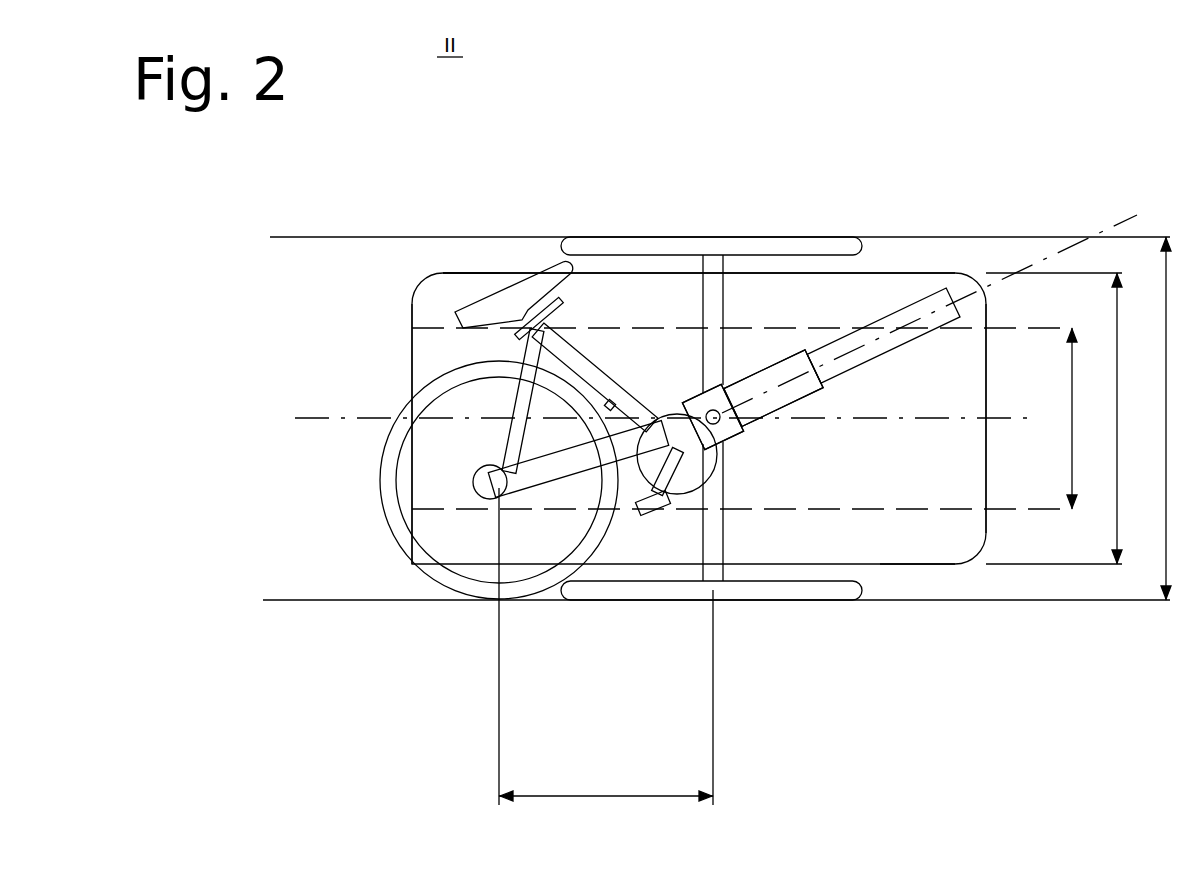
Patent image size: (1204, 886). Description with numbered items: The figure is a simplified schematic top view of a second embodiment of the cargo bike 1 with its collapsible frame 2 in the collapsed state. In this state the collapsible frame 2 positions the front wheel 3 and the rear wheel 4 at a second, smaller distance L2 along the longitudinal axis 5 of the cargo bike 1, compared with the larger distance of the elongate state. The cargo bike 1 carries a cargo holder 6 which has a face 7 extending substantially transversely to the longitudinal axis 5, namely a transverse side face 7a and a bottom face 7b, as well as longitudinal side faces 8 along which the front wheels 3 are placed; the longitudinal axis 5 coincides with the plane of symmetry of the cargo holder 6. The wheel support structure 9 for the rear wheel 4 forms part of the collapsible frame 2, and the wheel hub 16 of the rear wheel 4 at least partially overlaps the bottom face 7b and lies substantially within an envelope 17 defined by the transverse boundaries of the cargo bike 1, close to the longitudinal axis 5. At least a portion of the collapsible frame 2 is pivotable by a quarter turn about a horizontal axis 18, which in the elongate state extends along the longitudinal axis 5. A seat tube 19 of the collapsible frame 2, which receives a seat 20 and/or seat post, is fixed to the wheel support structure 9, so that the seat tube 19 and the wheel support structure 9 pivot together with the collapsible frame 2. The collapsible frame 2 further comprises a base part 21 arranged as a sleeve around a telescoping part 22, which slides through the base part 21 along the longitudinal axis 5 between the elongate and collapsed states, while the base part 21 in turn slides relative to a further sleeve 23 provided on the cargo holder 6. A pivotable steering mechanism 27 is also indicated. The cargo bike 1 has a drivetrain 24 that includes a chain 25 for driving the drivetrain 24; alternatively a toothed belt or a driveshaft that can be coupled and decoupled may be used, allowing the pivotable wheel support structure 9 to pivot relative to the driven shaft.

The cargo bike 1 is at (853, 140).
The collapsible frame 2 is at (789, 348).
The front wheel 3 is at (583, 228).
The rear wheel 4 is at (380, 531).
The longitudinal axis 5 is at (315, 420).
The cargo holder 6 is at (947, 265).
The transversely extending face of cargo holder 7 is at (698, 342).
The transverse side face of cargo holder 7a is at (412, 313).
The bottom face of cargo holder 7b is at (660, 307).
The longitudinal side face of cargo holder 8 is at (460, 273).
The wheel support structure 9 is at (505, 398).
The wheel hub 16 is at (485, 487).
The envelope defined by transverse boundaries of the cargo bike 17 is at (1093, 418).
The horizontal axis 18 is at (1144, 213).
The seat tube 19 is at (590, 368).
The seat 20 is at (513, 293).
The base part of collapsible frame 21 is at (794, 414).
The telescoping part of collapsible frame 22 is at (892, 298).
The further sleeve 23 is at (736, 456).
The drivetrain 24 is at (577, 512).
The chain 25 is at (542, 512).
The pivotable steering mechanism 27 is at (728, 396).
The second distance L2 is at (606, 646).